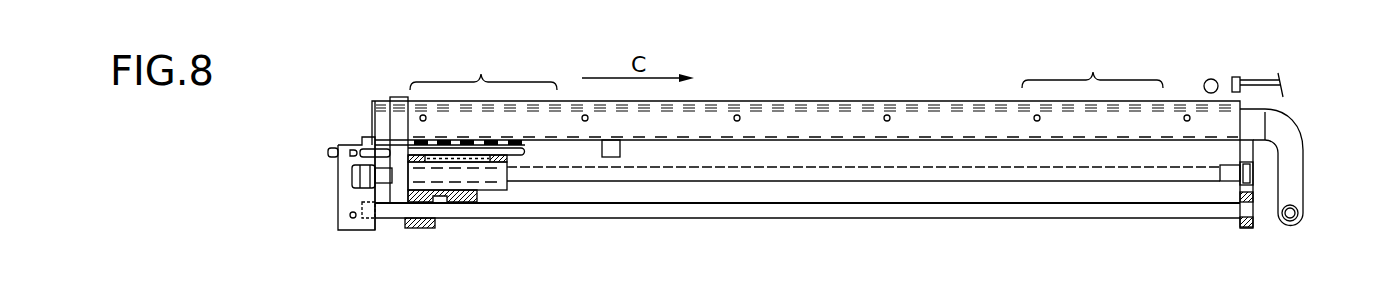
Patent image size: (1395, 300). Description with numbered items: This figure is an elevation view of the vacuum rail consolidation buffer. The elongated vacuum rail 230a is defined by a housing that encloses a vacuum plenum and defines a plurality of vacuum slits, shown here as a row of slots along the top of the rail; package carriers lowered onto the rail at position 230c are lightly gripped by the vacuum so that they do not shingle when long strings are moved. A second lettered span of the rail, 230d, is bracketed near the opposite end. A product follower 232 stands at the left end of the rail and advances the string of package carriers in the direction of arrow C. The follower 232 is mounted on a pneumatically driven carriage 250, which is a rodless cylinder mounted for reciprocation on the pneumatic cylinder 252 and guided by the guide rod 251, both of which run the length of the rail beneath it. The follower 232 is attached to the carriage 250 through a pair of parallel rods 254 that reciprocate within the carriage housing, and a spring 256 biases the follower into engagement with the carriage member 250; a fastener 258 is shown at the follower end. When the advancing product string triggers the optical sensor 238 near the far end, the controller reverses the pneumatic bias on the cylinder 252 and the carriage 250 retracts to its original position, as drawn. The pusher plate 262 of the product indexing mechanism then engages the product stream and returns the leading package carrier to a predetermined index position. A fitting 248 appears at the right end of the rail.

The vacuum rail 230a is at (843, 76).
The position on vacuum rail 230c is at (483, 67).
The mandrel section 230d is at (1092, 65).
The product follower 232 is at (402, 97).
The optical sensor 238 is at (1210, 79).
The elbow conduit 248 is at (1298, 127).
The carriage 250 is at (460, 198).
The guide rod 251 is at (860, 212).
The pneumatic cylinder 252 is at (692, 175).
The parallel rod 254 is at (525, 155).
The spring 256 is at (512, 157).
The bolt 258 is at (352, 172).
The pusher plate 262 is at (1237, 76).